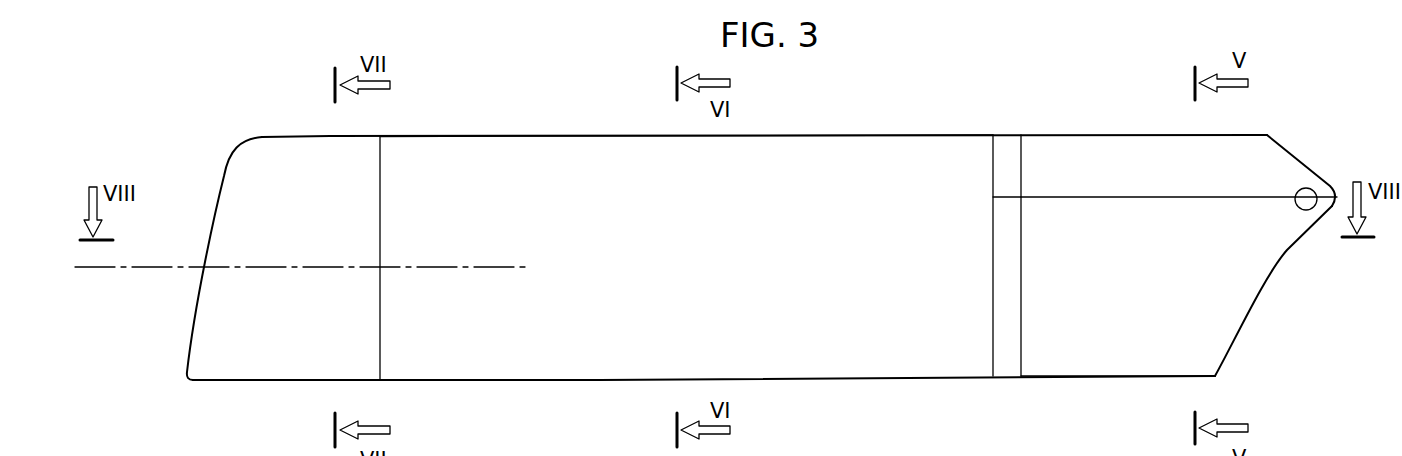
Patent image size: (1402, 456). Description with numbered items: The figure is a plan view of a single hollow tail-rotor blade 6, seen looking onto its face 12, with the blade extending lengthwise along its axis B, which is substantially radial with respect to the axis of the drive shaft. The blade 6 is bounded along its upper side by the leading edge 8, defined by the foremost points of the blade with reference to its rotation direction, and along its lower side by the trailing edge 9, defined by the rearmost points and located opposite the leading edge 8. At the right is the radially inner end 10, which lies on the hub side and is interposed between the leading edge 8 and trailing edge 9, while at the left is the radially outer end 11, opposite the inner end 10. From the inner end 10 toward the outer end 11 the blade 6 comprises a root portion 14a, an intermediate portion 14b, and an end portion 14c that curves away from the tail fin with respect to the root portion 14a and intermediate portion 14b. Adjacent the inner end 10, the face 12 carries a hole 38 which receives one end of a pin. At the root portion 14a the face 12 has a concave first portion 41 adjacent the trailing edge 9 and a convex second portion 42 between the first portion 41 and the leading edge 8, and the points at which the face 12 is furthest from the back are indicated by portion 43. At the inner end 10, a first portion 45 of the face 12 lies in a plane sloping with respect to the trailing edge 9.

The blade 6 is at (736, 238).
The leading edge 8 is at (552, 130).
The trailing edge 9 is at (570, 387).
The radially inner end 10 is at (1290, 223).
The radially outer end 11 is at (192, 190).
The face 12 is at (610, 200).
The root portion 14a is at (1112, 236).
The intermediate portion 14b is at (440, 175).
The end portion 14c is at (267, 165).
The hole 38 is at (1296, 205).
The concave first portion 41 is at (1082, 333).
The convex second portion 42 is at (1046, 150).
The portion of maximum thickness 43 is at (1262, 194).
The first portion 45 is at (1243, 325).
The axis B is at (140, 270).